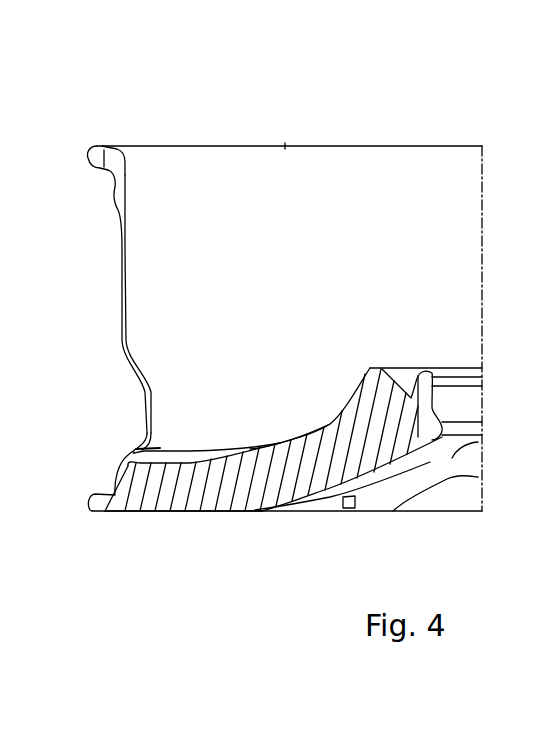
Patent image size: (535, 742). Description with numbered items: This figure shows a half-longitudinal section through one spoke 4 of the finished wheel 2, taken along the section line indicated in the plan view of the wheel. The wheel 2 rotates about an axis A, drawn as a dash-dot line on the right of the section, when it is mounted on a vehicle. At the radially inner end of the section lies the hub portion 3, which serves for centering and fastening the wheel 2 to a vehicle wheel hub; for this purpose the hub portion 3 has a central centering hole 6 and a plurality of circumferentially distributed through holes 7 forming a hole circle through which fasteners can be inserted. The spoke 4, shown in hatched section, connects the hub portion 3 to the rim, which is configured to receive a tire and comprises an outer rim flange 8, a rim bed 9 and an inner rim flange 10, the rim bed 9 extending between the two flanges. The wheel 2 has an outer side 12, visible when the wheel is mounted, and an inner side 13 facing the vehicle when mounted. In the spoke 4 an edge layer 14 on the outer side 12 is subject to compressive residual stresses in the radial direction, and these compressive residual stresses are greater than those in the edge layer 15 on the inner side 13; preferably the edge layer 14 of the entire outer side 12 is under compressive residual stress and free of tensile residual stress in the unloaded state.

The wheel 2 is at (195, 130).
The hub portion 3 is at (400, 357).
The spoke 4 is at (236, 484).
The central centering hole 6 is at (453, 412).
The through hole 7 is at (468, 468).
The outer rim flange 8 is at (100, 498).
The rim bed 9 is at (120, 286).
The inner rim flange 10 is at (90, 151).
The outer side 12 is at (191, 552).
The inner side 13 is at (272, 256).
The edge layer of the outer side 14 is at (311, 491).
The edge layer of the inner side 15 is at (288, 440).
The axis A is at (482, 237).